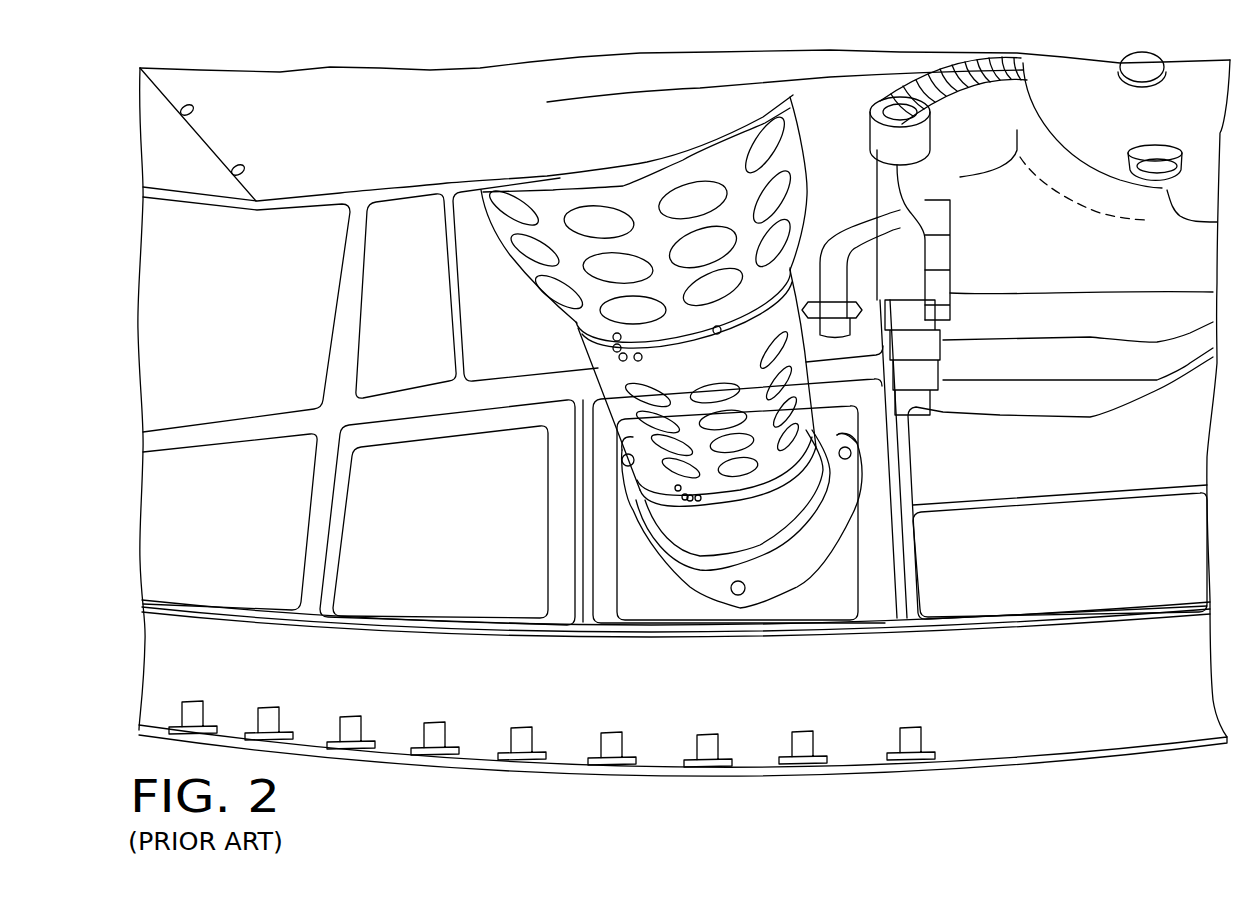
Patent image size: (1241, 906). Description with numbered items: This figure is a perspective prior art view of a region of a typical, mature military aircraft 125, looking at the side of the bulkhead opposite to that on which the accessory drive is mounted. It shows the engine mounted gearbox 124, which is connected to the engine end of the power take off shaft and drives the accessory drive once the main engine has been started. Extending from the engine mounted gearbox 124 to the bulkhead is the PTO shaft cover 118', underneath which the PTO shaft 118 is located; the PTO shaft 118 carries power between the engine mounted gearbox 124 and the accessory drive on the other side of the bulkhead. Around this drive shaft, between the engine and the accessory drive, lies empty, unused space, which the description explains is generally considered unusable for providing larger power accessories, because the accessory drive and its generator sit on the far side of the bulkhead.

The engine mounted gearbox 124 is at (632, 72).
The PTO shaft 118 is at (622, 229).
The PTO shaft cover 118' is at (720, 439).
The mature military aircraft 125 is at (913, 780).